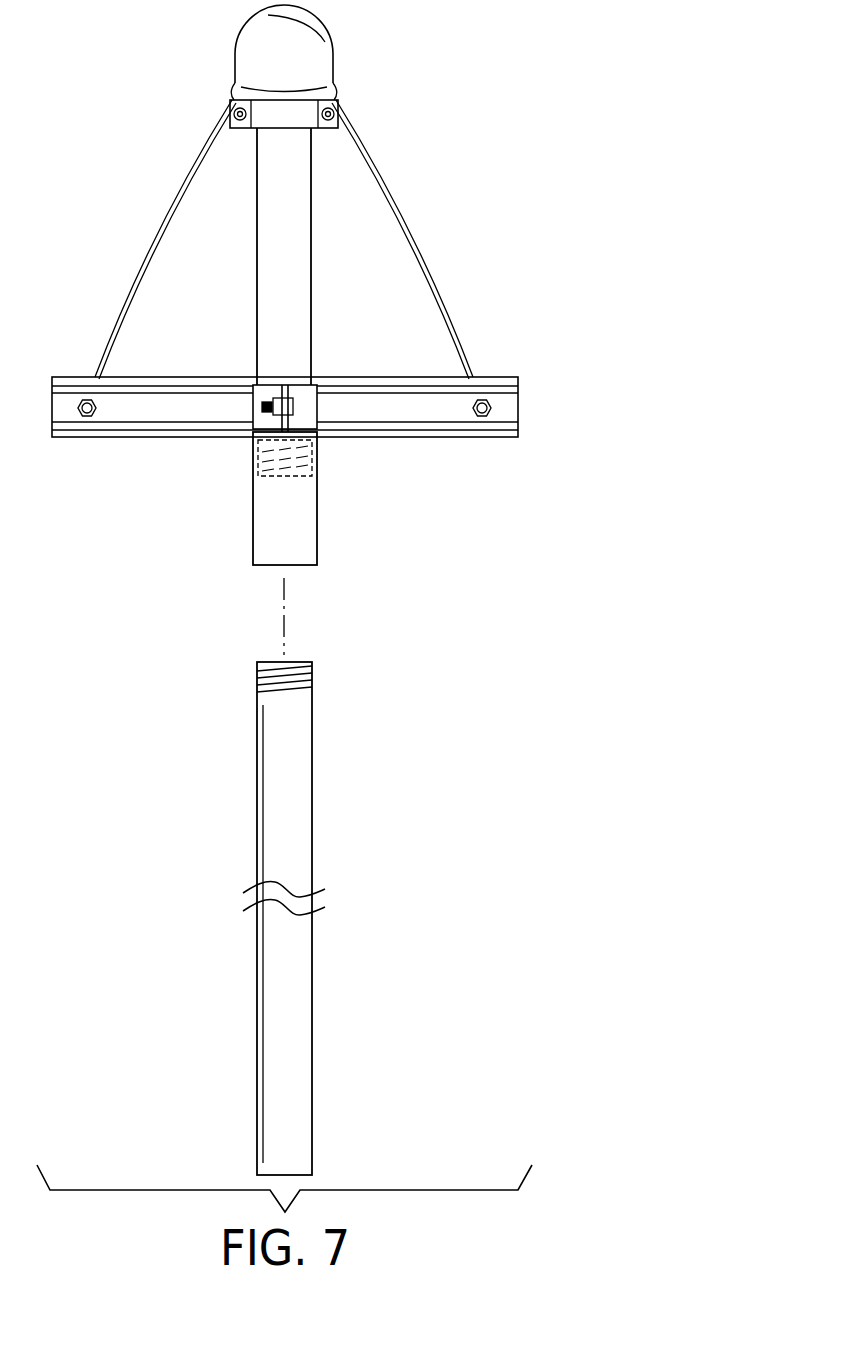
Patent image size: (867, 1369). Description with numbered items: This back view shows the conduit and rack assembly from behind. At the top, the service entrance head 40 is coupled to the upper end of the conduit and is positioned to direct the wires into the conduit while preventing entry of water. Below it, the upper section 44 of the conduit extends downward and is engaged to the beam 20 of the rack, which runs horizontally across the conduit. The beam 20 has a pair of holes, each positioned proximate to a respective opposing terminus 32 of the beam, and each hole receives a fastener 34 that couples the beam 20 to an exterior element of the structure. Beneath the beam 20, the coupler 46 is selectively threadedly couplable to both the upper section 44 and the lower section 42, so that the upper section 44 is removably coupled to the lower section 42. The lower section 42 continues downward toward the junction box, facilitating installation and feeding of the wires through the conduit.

The service entrance head 40 is at (306, 30).
The upper section 44 is at (320, 262).
The beam 20 is at (442, 393).
The fastener 34 is at (500, 398).
The opposing terminus 32 is at (492, 416).
The coupler 46 is at (318, 517).
The lower section 42 is at (314, 754).